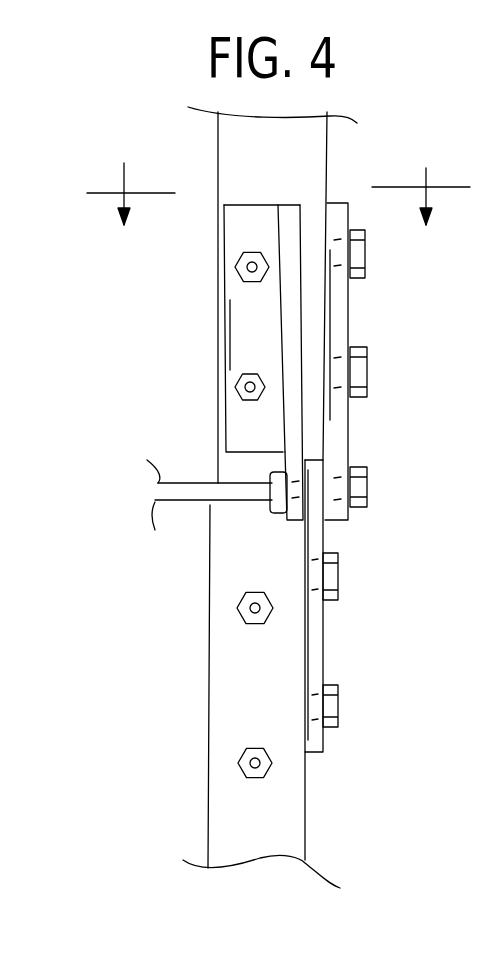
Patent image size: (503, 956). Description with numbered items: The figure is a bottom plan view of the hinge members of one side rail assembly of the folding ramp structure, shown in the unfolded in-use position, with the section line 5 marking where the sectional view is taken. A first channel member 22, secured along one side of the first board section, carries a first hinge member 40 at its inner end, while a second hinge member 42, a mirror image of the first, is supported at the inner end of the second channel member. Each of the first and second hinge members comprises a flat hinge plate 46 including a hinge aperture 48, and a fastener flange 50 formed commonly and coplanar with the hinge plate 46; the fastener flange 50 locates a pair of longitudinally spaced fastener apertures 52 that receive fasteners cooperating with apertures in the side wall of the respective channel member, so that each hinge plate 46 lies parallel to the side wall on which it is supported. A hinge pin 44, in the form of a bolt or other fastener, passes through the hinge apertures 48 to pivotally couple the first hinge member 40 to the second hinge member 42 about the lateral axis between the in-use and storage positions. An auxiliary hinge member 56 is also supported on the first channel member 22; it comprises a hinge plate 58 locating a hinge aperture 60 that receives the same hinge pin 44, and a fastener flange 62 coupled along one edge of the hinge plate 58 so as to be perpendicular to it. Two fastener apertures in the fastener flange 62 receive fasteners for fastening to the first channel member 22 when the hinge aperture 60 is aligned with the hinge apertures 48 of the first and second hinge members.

The first channel member 22 is at (302, 155).
The section line 5- 5 is at (278, 177).
The fastener flange 62 is at (243, 313).
The auxiliary hinge member 56 is at (243, 335).
The hinge plate 58 is at (297, 428).
The fastener flange 50 is at (335, 283).
The first hinge member 40 is at (347, 433).
The hinge pin 44 is at (368, 487).
The hinge plate 46 is at (342, 510).
The second hinge member 42 is at (322, 641).
The hinge aperture 60 is at (287, 515).
The hinge aperture 48 is at (320, 515).
The fastener apertures 52 is at (313, 718).